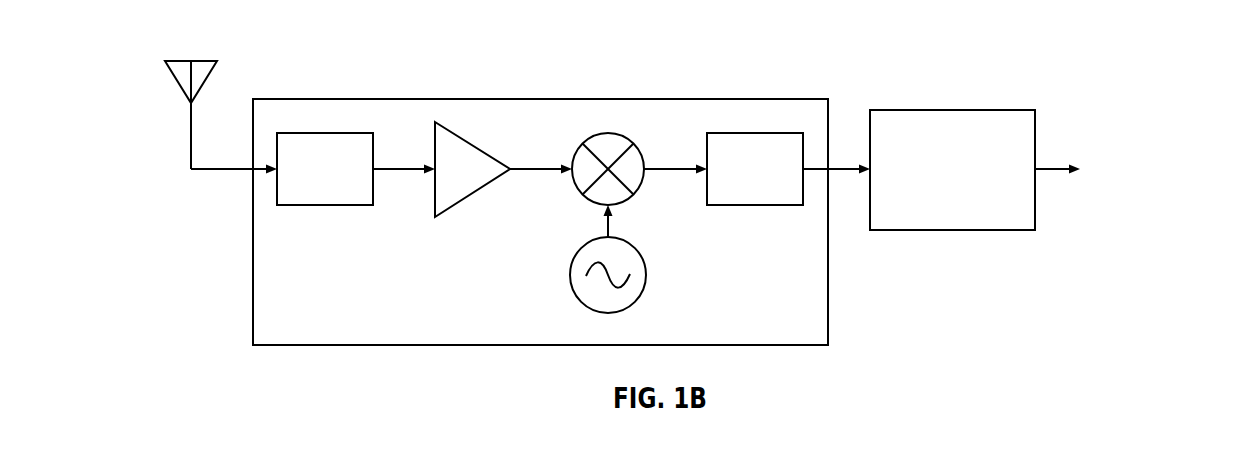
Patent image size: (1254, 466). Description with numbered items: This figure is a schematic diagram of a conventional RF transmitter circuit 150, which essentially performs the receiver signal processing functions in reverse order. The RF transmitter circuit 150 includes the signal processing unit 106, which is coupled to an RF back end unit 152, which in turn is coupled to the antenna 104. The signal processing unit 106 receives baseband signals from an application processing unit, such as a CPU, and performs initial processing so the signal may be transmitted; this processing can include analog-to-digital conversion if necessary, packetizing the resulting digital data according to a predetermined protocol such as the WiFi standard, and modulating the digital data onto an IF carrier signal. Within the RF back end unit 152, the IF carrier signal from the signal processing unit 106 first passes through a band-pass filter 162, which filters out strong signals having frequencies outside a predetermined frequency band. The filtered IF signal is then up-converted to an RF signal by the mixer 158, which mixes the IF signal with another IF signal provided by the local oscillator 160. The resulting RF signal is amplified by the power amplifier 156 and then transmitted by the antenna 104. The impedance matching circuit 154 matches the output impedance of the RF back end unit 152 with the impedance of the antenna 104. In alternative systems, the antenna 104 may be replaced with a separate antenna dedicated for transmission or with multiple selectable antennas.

The antenna 104 is at (180, 60).
The signal processing unit 106 is at (910, 110).
The RF transmitter circuit 150 is at (768, 29).
The RF back end unit 152 is at (295, 98).
The impedance matching circuit 154 is at (335, 133).
The power amplifier 156 is at (472, 142).
The mixer 158 is at (627, 134).
The local oscillator 160 is at (628, 239).
The band-pass filter 162 is at (762, 133).